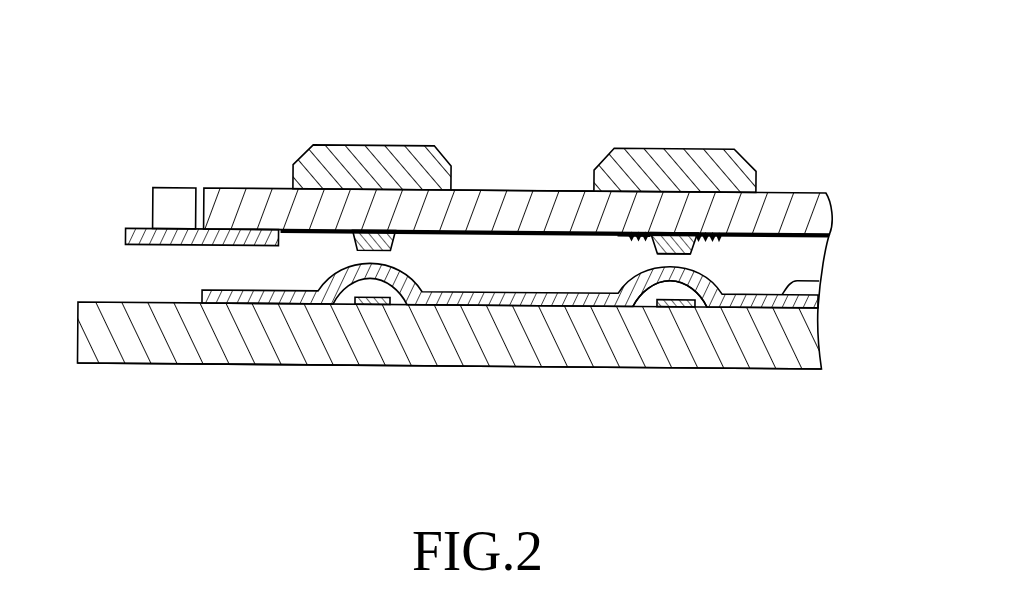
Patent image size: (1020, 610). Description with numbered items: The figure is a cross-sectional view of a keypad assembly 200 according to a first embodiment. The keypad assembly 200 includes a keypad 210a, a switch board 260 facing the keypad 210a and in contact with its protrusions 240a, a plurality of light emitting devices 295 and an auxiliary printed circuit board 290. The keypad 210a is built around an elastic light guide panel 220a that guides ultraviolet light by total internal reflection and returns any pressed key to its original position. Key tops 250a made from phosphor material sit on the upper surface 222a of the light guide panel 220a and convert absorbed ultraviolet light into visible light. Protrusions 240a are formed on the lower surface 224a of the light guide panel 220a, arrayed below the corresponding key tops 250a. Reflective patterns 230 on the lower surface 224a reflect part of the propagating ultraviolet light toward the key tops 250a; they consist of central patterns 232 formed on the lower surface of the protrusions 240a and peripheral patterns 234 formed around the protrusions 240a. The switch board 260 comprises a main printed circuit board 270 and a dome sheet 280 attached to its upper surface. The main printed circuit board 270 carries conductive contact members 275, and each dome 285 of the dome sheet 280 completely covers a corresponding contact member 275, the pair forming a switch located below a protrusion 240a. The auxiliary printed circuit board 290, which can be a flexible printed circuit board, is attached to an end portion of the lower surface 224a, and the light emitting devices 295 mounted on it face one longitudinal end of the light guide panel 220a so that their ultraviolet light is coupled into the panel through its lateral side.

The keypad assembly 200 is at (487, 235).
The keypad 210a is at (800, 181).
The light guide panel 220a is at (820, 211).
The upper surface 222a is at (484, 186).
The lower surface 224a is at (800, 231).
The reflective patterns 230 is at (630, 238).
The central patterns 232 is at (690, 254).
The peripheral patterns 234 is at (620, 229).
The protrusions 240a is at (697, 243).
The key tops 250a is at (675, 143).
The switch board 260 is at (412, 385).
The main printed circuit board 270 is at (795, 332).
The conductive contact members 275 is at (680, 302).
The dome sheet 280 is at (808, 275).
The domes 285 is at (640, 274).
The auxiliary printed circuit board 290 is at (125, 235).
The light emitting devices 295 is at (175, 186).